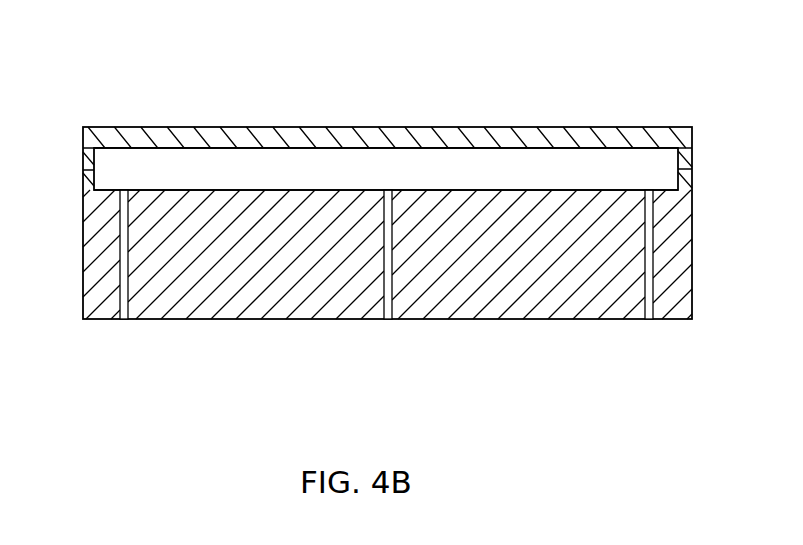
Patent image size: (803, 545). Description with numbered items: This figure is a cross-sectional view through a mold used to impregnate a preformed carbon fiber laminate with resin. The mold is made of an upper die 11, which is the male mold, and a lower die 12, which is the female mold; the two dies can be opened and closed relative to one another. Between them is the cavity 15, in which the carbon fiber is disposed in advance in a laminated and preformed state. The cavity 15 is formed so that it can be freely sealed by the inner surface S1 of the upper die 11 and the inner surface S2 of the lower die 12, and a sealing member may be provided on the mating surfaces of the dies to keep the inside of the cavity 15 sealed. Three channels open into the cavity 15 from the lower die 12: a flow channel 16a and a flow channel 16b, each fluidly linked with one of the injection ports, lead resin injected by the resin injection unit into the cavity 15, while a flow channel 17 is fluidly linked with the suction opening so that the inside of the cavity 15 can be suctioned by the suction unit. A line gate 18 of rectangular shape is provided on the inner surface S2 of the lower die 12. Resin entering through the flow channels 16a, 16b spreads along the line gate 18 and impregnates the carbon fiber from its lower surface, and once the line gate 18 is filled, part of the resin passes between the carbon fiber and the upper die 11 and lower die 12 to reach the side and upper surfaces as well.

The upper die 11 is at (90, 149).
The lower die 12 is at (83, 256).
The cavity 15 is at (384, 172).
The flow channel 16a is at (126, 319).
The flow channel 16b is at (656, 319).
The flow channel 17 is at (390, 319).
The line gate 18 is at (112, 200).
The inner surface of the upper die S1 is at (339, 146).
The inner surface of the lower die S2 is at (528, 192).